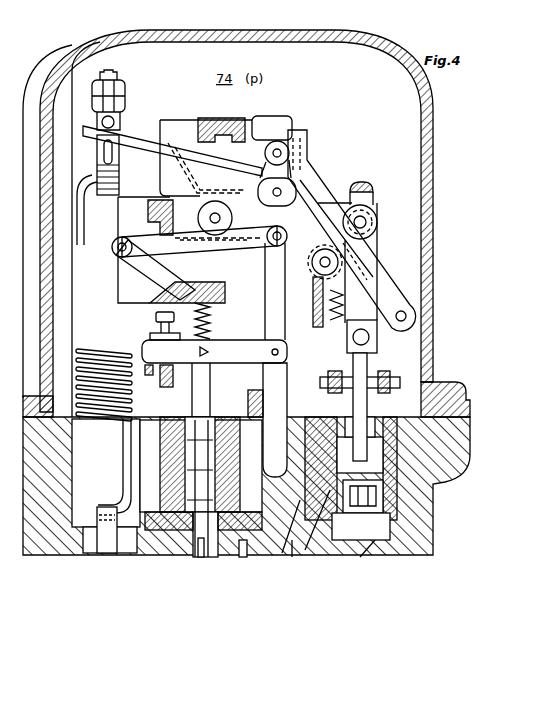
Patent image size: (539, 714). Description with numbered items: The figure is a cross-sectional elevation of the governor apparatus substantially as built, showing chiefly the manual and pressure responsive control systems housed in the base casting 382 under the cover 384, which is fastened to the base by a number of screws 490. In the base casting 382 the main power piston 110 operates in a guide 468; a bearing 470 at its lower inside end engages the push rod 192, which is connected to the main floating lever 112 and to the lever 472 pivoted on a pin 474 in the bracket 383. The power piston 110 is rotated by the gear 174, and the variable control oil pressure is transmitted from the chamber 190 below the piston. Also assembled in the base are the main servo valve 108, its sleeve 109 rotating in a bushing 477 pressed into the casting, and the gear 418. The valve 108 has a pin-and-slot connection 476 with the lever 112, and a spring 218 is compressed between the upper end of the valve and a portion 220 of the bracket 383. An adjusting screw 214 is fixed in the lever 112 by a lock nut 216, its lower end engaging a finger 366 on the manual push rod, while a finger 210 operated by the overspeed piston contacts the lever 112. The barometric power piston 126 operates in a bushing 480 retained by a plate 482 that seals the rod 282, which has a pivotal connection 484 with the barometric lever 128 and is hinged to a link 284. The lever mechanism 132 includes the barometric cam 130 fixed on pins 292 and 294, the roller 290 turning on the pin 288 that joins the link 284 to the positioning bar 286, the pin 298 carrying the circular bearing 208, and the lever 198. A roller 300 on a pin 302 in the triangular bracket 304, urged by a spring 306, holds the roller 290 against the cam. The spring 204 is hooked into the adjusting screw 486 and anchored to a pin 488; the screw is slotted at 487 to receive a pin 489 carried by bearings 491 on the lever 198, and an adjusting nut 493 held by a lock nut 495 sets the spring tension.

The main servo valve 108 is at (198, 408).
The main servo valve sleeve 109 is at (188, 556).
The main power piston 110 is at (305, 551).
The main floating lever 112 is at (214, 351).
The barometric power piston 126 is at (377, 492).
The barometric lever 128 is at (382, 376).
The barometric cam 130 is at (396, 293).
The lever mechanism 132 is at (348, 162).
The gear 174 is at (255, 388).
The chamber 190 is at (292, 558).
The push rod 192 is at (273, 269).
The lever 198 is at (202, 158).
The spring 204 is at (103, 418).
The circular bearing 208 is at (145, 217).
The finger 210 is at (149, 376).
The adjusting screw 214 is at (156, 317).
The lock nut 216 is at (150, 336).
The spring 218 is at (212, 313).
The portion of bracket 220 is at (188, 292).
The rod 282 is at (358, 410).
The link 284 is at (370, 248).
The positioning bar 286 is at (235, 218).
The pin 288 is at (365, 215).
The roller 290 is at (377, 230).
The pin 292 is at (398, 324).
The pin 294 is at (283, 150).
The pin 298 is at (210, 220).
The roller 300 is at (318, 265).
The pin 302 is at (318, 288).
The triangular bracket 304 is at (330, 302).
The spring 306 is at (333, 323).
The finger 366 is at (176, 378).
The base casting 382 is at (55, 485).
The bracket 383 is at (228, 161).
The cover 384 is at (435, 126).
The gear 418 is at (243, 557).
The guide 468 is at (358, 559).
The bearing 470 is at (282, 554).
The lever 472 is at (199, 243).
The pin 474 is at (130, 258).
The pin-and-slot connection 476 is at (207, 349).
The bushing 477 is at (160, 548).
The bushing 480 is at (395, 511).
The plate 482 is at (393, 427).
The pivotal connection 484 is at (338, 374).
The adjusting screw 486 is at (112, 168).
The slot 487 is at (104, 148).
The pin 488 is at (104, 558).
The pin 489 is at (120, 121).
The screws 490 is at (462, 389).
The bearings 491 is at (118, 130).
The adjusting nut 493 is at (125, 105).
The lock nut 495 is at (118, 90).